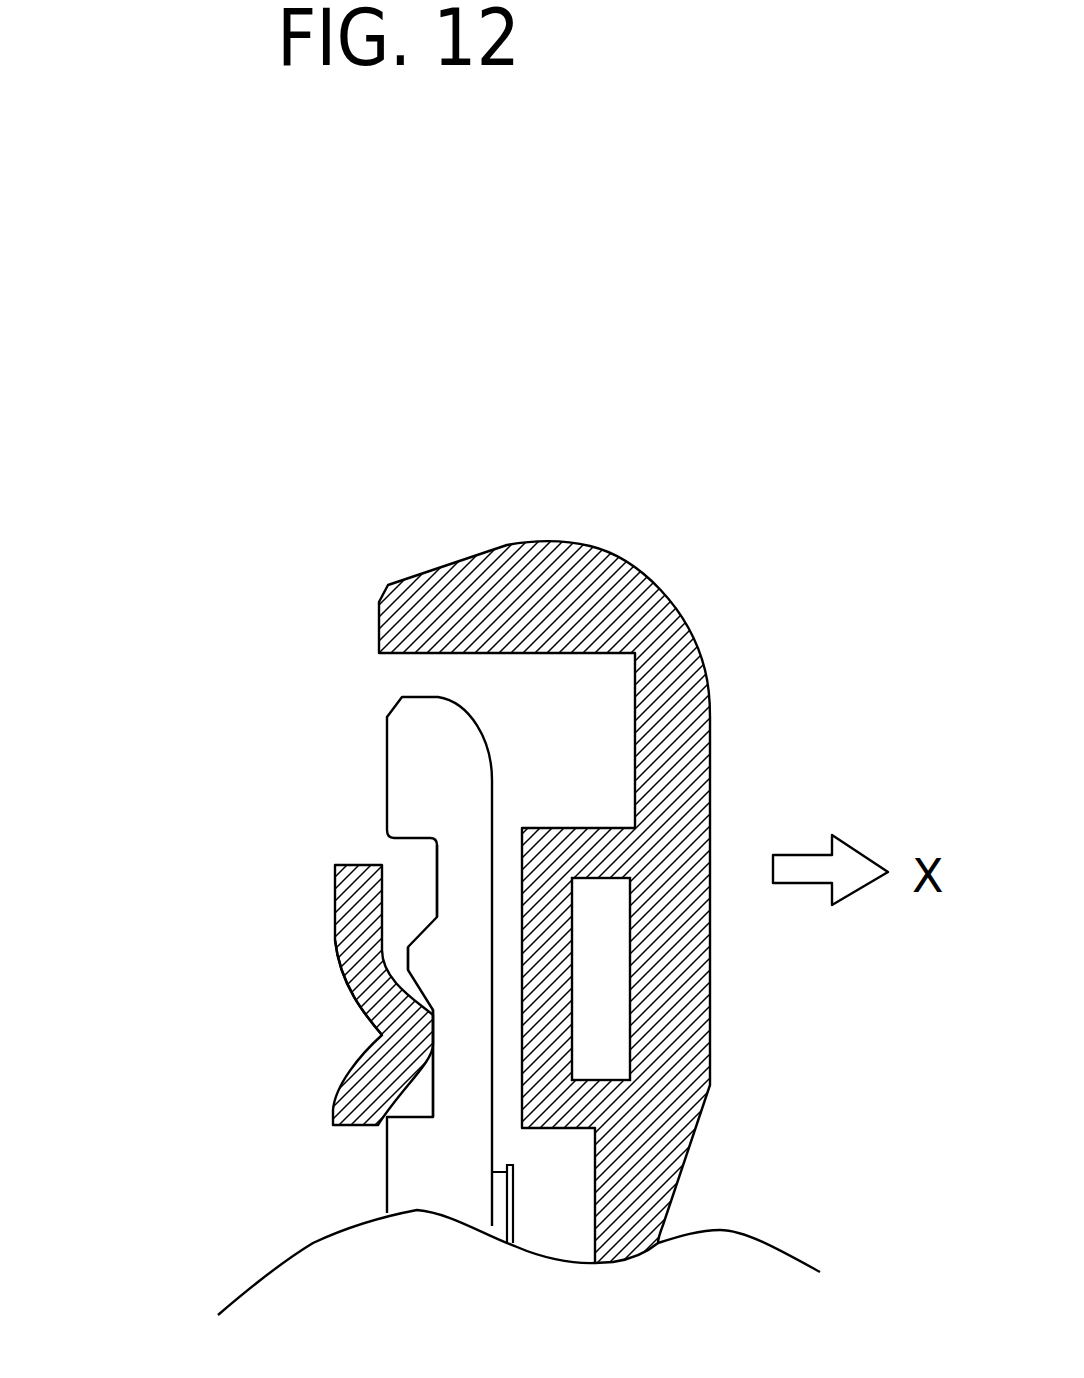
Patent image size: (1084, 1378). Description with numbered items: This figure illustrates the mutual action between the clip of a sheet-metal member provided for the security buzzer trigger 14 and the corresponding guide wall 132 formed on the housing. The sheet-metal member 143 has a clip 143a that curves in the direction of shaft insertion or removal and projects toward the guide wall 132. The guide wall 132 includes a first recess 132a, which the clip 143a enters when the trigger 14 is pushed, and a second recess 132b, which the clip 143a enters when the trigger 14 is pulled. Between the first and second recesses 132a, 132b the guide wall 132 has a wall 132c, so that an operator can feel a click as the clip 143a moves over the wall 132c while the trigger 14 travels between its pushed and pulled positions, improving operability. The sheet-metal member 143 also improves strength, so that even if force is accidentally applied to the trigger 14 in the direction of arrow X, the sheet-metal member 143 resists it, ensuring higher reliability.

The trigger 14 is at (692, 415).
The guide wall 132 is at (350, 832).
The first recess 132a is at (433, 1072).
The second recess 132b is at (434, 886).
The wall 132c is at (407, 968).
The sheet-metal member 143 is at (328, 909).
The clip 143a is at (413, 1042).